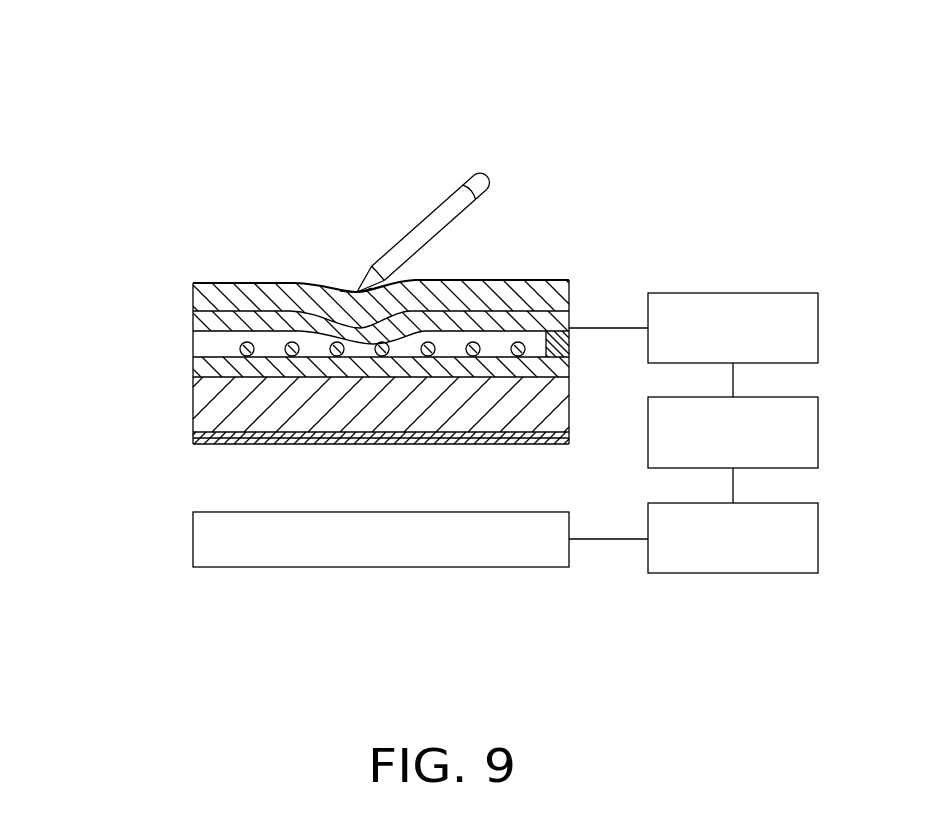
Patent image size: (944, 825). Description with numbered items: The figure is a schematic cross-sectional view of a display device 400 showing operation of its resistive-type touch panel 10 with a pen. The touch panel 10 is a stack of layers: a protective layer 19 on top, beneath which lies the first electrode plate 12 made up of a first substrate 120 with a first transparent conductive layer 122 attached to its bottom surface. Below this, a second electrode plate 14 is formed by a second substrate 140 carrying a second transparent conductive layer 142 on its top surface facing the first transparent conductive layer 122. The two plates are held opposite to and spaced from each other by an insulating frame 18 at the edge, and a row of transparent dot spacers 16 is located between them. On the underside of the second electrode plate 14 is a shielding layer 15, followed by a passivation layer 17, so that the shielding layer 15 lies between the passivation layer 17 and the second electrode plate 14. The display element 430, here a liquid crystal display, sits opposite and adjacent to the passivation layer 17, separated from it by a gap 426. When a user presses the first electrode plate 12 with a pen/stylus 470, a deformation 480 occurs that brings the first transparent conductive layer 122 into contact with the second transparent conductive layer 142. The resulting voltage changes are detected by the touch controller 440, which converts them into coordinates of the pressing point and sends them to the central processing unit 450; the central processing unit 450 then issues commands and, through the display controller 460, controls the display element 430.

The display device 400 is at (455, 37).
The touch panel 10 is at (58, 233).
The protective layer 19 is at (193, 282).
The first electrode plate 12 is at (104, 272).
The first substrate 120 is at (193, 290).
The first transparent conductive layer 122 is at (193, 319).
The transparent dot spacers 16 is at (513, 332).
The insulating frame 18 is at (572, 342).
The second electrode plate 14 is at (104, 350).
The second transparent conductive layer 142 is at (193, 365).
The second substrate 140 is at (196, 405).
The shielding layer 15 is at (193, 433).
The passivation layer 17 is at (196, 444).
The deformation 480 is at (355, 290).
The pen/stylus 470 is at (421, 232).
The gap 426 is at (208, 487).
The display element 430 is at (206, 548).
The touch controller 440 is at (726, 293).
The central processing unit 450 is at (786, 397).
The display controller 460 is at (786, 503).